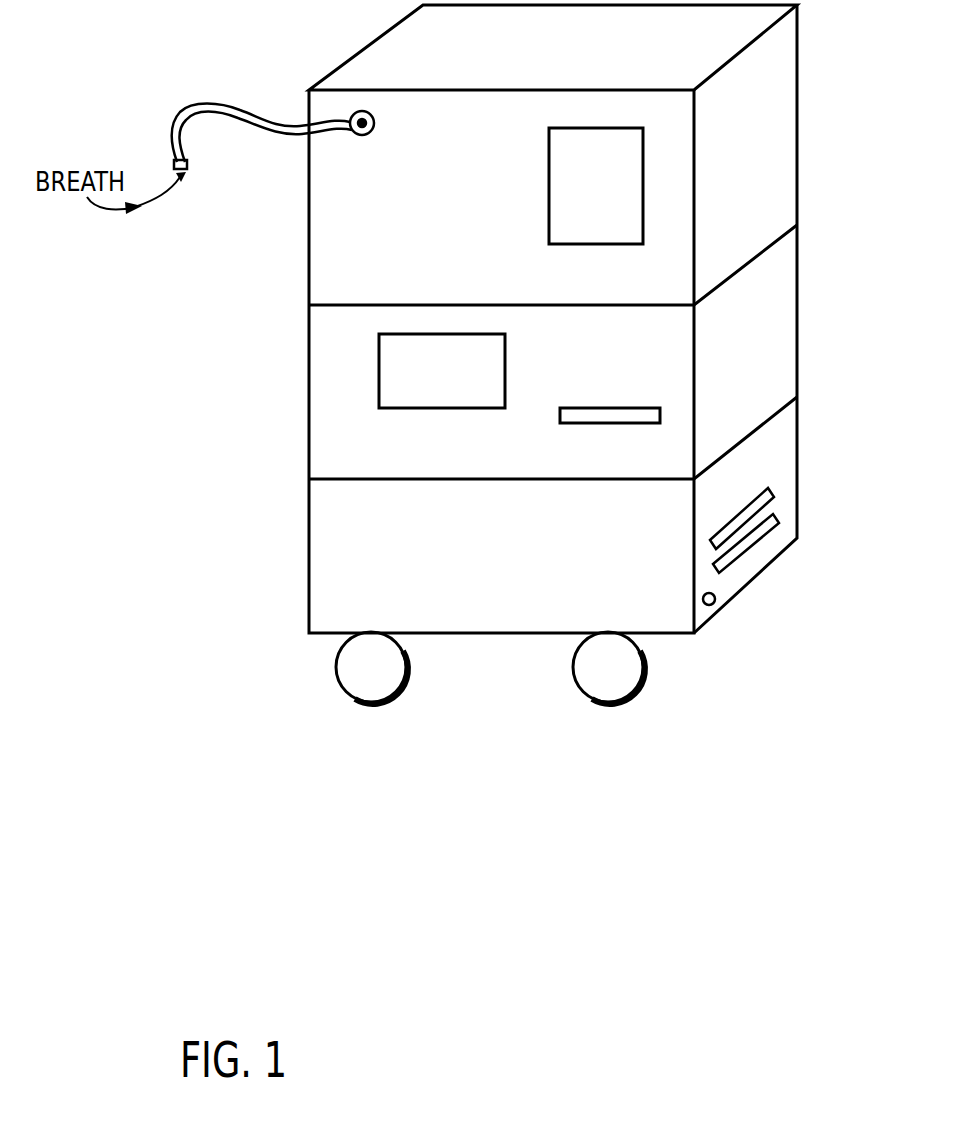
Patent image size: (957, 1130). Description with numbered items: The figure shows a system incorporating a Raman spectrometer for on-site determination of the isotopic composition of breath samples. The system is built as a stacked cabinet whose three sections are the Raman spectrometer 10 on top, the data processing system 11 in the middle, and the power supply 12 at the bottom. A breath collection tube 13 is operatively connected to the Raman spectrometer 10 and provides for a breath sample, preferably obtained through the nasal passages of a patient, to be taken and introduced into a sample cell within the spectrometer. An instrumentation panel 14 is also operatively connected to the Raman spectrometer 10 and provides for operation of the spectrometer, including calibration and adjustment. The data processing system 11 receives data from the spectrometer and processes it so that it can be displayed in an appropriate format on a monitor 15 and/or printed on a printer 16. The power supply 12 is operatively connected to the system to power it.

The Raman spectrometer 10 is at (338, 206).
The data processing system 11 is at (340, 424).
The power supply 12 is at (340, 573).
The breath collection tube 13 is at (170, 128).
The instrumentation panel 14 is at (618, 193).
The monitor 15 is at (405, 368).
The printer 16 is at (653, 410).